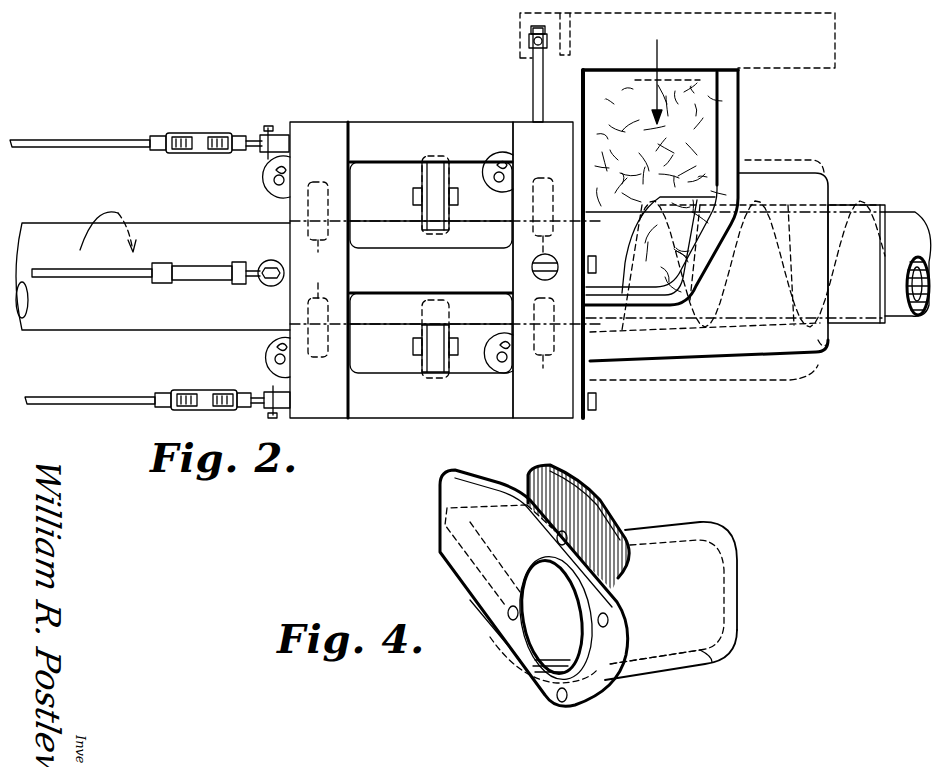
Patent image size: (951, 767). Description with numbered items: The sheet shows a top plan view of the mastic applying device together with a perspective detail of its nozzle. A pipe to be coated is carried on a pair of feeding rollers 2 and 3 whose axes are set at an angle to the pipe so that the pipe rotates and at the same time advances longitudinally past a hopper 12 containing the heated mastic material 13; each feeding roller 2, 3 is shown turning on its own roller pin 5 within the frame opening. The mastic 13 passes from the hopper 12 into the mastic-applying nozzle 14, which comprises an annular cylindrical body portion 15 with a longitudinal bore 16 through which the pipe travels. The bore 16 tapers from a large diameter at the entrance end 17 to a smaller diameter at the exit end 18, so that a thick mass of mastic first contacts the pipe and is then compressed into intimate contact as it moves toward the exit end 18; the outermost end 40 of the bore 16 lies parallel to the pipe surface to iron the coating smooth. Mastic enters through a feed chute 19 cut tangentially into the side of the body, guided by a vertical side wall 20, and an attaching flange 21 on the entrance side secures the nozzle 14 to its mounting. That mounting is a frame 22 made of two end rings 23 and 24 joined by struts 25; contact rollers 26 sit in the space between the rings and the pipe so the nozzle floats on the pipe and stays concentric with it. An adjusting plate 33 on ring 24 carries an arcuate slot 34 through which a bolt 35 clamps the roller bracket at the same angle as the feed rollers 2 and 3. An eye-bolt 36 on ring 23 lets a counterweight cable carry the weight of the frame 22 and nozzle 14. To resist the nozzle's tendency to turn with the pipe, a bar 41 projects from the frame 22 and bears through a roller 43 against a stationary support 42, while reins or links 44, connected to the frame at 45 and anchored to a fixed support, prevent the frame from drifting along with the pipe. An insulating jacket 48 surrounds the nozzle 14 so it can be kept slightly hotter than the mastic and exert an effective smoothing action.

In FIG. 2, the feeding roller 2 is at (430, 345).
In FIG. 2, the feeding roller 3 is at (420, 175).
In FIG. 2, the roller pin 5 is at (458, 201).
In FIG. 2, the hopper 12 is at (838, 40).
In FIG. 2, the mastic material 13 is at (690, 146).
In FIG. 2, the mastic-applying nozzle 14 is at (801, 188).
In FIG. 4, the mastic-applying nozzle 14 is at (666, 520).
In FIG. 2, the annular cylindrical body portion 15 is at (766, 353).
In FIG. 4, the annular cylindrical body portion 15 is at (682, 530).
In FIG. 2, the longitudinal bore 16 is at (735, 318).
In FIG. 4, the longitudinal bore 16 is at (663, 652).
In FIG. 2, the entrance end 17 is at (596, 287).
In FIG. 4, the entrance end 17 is at (547, 660).
In FIG. 2, the exit end 18 is at (830, 284).
In FIG. 4, the exit end 18 is at (728, 603).
In FIG. 2, the mastic feed chute 19 is at (718, 72).
In FIG. 4, the mastic feed chute 19 is at (445, 508).
In FIG. 2, the side wall 20 is at (737, 95).
In FIG. 4, the side wall 20 is at (593, 483).
In FIG. 2, the attaching flange 21 is at (580, 134).
In FIG. 4, the attaching flange 21 is at (605, 650).
In FIG. 2, the frame 22 is at (423, 120).
In FIG. 2, the end ring 23 is at (520, 122).
In FIG. 2, the end ring 24 is at (320, 130).
In FIG. 2, the struts 25 is at (367, 132).
In FIG. 2, the contact rollers 26 is at (429, 272).
In FIG. 2, the adjusting plate 33 is at (503, 196).
In FIG. 2, the arcuate slot 34 is at (503, 158).
In FIG. 2, the bolt 35 is at (494, 174).
In FIG. 2, the eye-bolt 36 is at (532, 267).
In FIG. 2, the outermost end of the bore 40 is at (830, 344).
In FIG. 4, the outermost end of the bore 40 is at (712, 656).
In FIG. 2, the bar 41 is at (533, 88).
In FIG. 2, the stationary support 42 is at (528, 24).
In FIG. 2, the roller 43 is at (528, 41).
In FIG. 2, the reins or links 44 is at (115, 140).
In FIG. 2, the connection point of links to frame 45 is at (270, 130).
In FIG. 2, the insulating jacket 48 is at (790, 376).